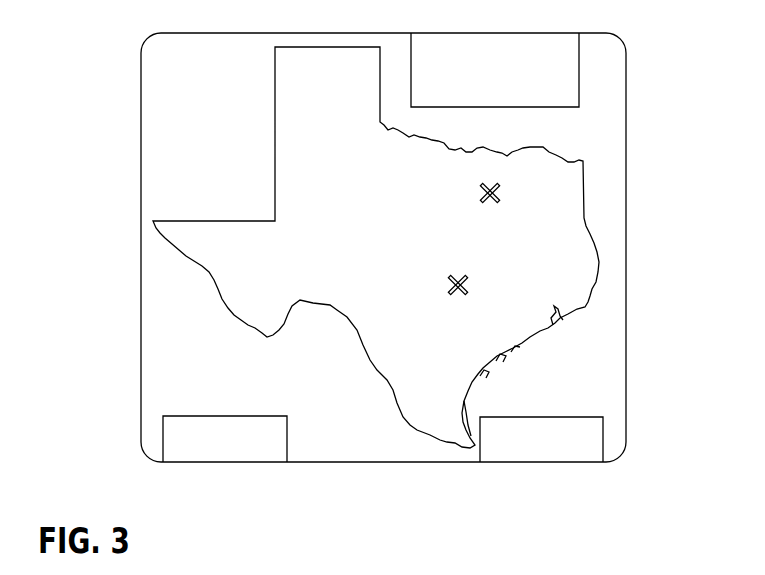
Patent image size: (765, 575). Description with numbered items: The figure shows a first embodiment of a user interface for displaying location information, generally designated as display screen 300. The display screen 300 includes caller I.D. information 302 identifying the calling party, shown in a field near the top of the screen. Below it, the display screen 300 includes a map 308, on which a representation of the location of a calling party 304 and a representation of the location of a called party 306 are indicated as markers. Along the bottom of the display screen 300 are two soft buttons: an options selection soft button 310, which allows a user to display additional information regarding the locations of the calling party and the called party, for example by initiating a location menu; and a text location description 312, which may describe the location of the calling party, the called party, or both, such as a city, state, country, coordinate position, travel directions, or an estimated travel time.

The display screen 300 is at (418, 247).
The caller I.D. information 302 is at (495, 59).
The representation of a location of a calling party 304 is at (522, 209).
The representation of a location of a called party 306 is at (489, 301).
The map 308 is at (389, 247).
The options selection soft button 310 is at (231, 461).
The text location description 312 is at (548, 461).